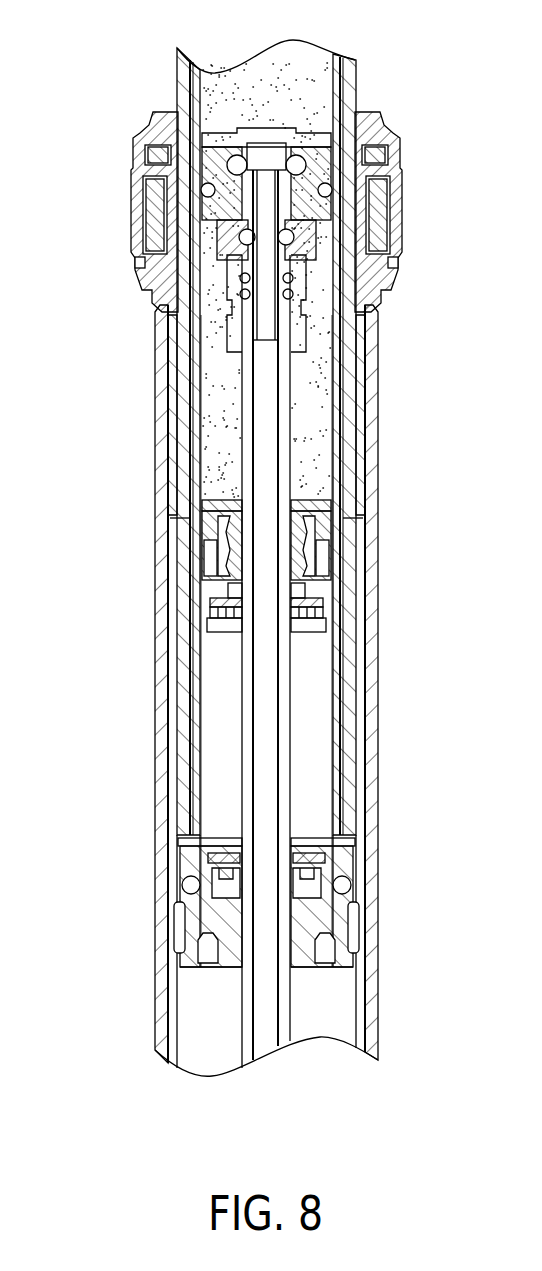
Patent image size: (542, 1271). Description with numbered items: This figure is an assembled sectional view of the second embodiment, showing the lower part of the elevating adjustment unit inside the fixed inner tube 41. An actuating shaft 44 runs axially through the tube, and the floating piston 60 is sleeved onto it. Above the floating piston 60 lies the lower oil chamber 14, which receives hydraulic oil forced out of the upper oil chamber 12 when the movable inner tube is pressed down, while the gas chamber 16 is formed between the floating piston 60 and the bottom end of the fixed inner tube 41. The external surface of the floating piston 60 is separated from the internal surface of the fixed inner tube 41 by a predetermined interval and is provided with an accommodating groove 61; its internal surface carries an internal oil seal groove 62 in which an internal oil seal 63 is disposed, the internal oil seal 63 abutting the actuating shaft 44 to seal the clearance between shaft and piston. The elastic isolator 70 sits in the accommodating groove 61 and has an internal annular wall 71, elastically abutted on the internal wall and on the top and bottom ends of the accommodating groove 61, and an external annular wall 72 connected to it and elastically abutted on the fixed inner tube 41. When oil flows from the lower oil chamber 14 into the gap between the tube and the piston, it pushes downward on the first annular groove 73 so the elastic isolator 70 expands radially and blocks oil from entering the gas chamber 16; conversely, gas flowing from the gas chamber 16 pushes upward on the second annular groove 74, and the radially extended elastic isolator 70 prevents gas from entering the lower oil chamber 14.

The upper oil chamber 12 is at (310, 72).
The lower oil chamber 14 is at (323, 288).
The gas chamber 16 is at (312, 797).
The fixed inner tube 41 is at (197, 366).
The actuating shaft 44 is at (222, 735).
The floating piston 60 is at (322, 478).
The accommodating groove 61 is at (337, 607).
The internal oil seal groove 62 is at (233, 593).
The internal oil seal 63 is at (225, 622).
The elastic isolator 70 is at (261, 559).
The internal annular wall 71 is at (345, 517).
The external annular wall 72 is at (340, 520).
The first annular groove 73 is at (335, 537).
The second annular groove 74 is at (330, 548).